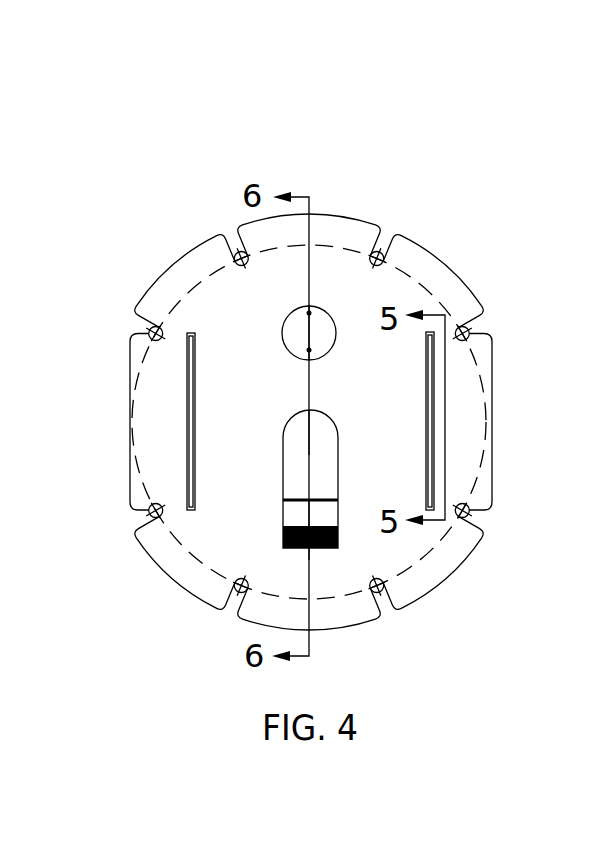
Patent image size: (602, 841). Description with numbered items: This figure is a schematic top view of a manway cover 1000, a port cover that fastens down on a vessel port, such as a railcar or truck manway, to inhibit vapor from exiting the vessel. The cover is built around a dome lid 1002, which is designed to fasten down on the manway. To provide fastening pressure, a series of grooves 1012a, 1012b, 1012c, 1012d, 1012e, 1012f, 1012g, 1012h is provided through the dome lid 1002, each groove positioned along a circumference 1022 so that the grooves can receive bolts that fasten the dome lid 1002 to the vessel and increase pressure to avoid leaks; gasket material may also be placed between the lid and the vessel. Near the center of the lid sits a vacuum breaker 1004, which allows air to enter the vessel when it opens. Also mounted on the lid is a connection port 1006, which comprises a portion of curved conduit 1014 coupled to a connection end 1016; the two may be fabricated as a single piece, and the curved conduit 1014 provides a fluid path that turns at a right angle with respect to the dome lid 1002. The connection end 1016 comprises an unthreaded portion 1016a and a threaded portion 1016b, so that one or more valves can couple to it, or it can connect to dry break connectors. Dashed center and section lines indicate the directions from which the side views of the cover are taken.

The manway cover 1000 is at (185, 145).
The dome lid 1002 is at (333, 213).
The vacuum breaker 1004 is at (283, 330).
The connection port 1006 is at (283, 443).
The groove 1012a is at (378, 251).
The groove 1012b is at (469, 333).
The groove 1012c is at (469, 511).
The groove 1012d is at (382, 592).
The groove 1012e is at (240, 591).
The groove 1012f is at (149, 511).
The groove 1012g is at (149, 333).
The groove 1012h is at (240, 251).
The curved conduit 1014 is at (338, 443).
The connection end 1016 is at (268, 528).
The unthreaded portion 1016a is at (283, 505).
The threaded portion 1016b is at (283, 541).
The circumference 1022 is at (410, 273).